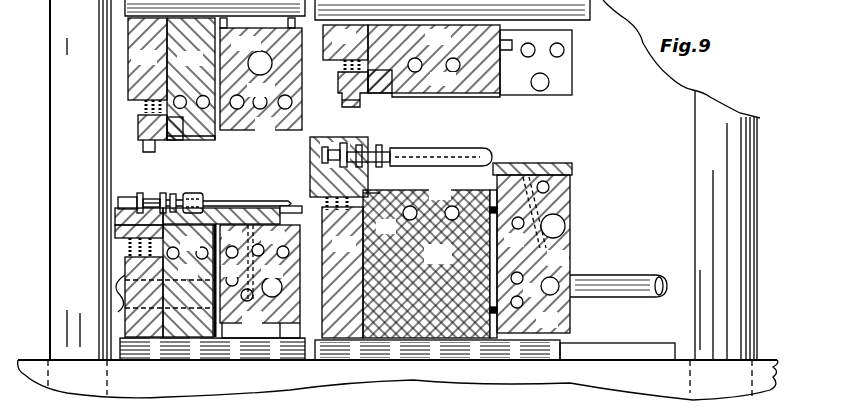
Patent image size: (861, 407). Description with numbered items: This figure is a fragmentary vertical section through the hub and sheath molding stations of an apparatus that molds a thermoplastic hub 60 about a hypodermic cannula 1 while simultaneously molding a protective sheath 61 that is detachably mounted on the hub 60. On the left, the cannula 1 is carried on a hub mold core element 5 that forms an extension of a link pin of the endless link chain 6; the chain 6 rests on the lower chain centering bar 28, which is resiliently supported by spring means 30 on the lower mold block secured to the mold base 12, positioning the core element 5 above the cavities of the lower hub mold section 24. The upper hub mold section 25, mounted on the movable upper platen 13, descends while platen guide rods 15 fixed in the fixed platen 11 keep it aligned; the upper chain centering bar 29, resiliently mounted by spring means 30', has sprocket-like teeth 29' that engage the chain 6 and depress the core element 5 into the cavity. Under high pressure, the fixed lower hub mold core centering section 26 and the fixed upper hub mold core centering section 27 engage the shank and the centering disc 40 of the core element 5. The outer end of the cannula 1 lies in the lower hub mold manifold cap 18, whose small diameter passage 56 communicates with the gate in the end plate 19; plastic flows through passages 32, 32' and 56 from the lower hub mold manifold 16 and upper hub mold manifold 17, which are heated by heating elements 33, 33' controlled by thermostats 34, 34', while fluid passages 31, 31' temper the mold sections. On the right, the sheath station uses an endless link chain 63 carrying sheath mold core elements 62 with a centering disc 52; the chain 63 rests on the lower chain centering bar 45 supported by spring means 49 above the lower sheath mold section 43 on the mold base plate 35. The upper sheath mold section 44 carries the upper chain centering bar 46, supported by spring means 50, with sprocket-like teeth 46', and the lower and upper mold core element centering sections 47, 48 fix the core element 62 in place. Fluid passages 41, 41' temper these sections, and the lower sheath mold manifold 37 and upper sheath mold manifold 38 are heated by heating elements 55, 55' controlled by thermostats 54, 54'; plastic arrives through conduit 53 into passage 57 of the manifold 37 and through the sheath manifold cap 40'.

The hypodermic cannula 1 is at (276, 200).
The hub mold core element 5 is at (181, 201).
The endless link chain 6 is at (140, 194).
The fixed platen 11 is at (146, 388).
The mold base 12 is at (222, 350).
The movable upper platen 13 is at (70, 0).
The platen guide rods 15 is at (78, 90).
The lower hub mold manifold 16 is at (260, 328).
The upper hub mold manifold 17 is at (273, 132).
The lower hub mold manifold cap 18 is at (292, 212).
The end plate 19 is at (201, 247).
The lower hub mold section 24 is at (192, 330).
The upper hub mold section 25 is at (217, 143).
The fixed lower hub mold core centering section 26 is at (120, 230).
The fixed upper hub mold core centering section 27 is at (171, 143).
The lower chain centering bar 28 is at (118, 216).
The upper chain centering bar 29 is at (113, 127).
The sprocket-like teeth 29' is at (107, 153).
The spring means 30 is at (103, 252).
The spring means 30' is at (147, 59).
The fluid passages 31 is at (188, 281).
The fluid passages 31' is at (191, 79).
The plastic passage 32 is at (149, 293).
The plastic passage 32' is at (272, 241).
The heating elements 33 is at (266, 256).
The heating elements 33' is at (261, 94).
The thermostat 34 is at (274, 278).
The thermostat 34' is at (251, 54).
The mold base plate 35 is at (588, 350).
The lower sheath mold manifold 37 is at (572, 208).
The upper sheath mold manifold 38 is at (576, 63).
The centering disc 40 is at (196, 180).
The sheath manifold cap 40' is at (550, 155).
The fluid passages 41 is at (431, 201).
The fluid passages 41' is at (434, 73).
The lower sheath mold section 43 is at (447, 264).
The upper sheath mold section 44 is at (447, 46).
The lower chain centering bar 45 is at (312, 173).
The upper chain centering bar 46 is at (338, 89).
The sprocket-like teeth 46' is at (335, 114).
The lower mold core element centering section 47 is at (381, 197).
The upper mold core element centering section 48 is at (372, 71).
The spring means 49 is at (343, 212).
The spring means 50 is at (345, 42).
The centering disc 52 is at (381, 146).
The conduit 53 is at (595, 278).
The thermostat 54 is at (556, 241).
The thermostat 54' is at (562, 97).
The heating elements 55 is at (556, 239).
The heating elements 55' is at (551, 28).
The small diameter passage 56 is at (244, 203).
The passage 57 is at (550, 296).
The hub 60 is at (214, 195).
The hypodermic needle protective sheath 61 is at (467, 153).
The sheath mold core elements 62 is at (362, 148).
The endless link chain 63 is at (352, 145).